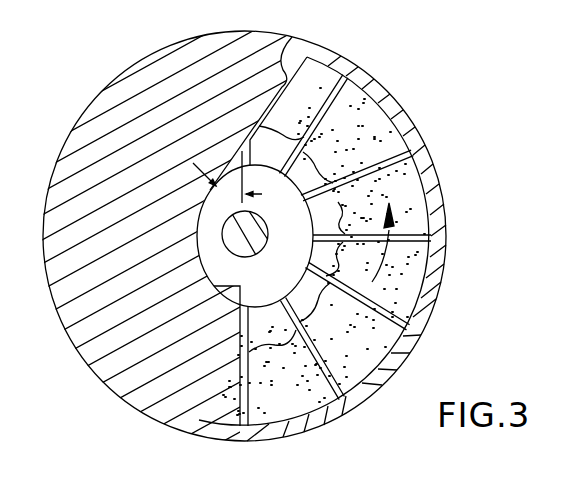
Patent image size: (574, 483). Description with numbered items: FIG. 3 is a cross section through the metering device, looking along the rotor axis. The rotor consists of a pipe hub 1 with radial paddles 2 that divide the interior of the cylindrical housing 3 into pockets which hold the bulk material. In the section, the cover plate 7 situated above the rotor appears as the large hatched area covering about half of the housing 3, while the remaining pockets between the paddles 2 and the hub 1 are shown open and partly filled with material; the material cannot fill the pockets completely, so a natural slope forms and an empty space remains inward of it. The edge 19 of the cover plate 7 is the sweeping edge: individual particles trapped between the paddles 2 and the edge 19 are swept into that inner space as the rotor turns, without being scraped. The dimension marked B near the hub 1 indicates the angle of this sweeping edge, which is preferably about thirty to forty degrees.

The hub 1 is at (294, 219).
The radial paddles 2 is at (432, 238).
The cylindrical housing 3 is at (440, 268).
The cover plate 7 is at (186, 80).
The edge 19 is at (292, 37).
The clearance width B is at (227, 183).